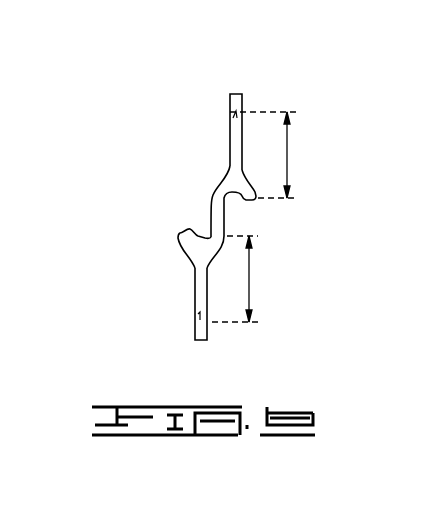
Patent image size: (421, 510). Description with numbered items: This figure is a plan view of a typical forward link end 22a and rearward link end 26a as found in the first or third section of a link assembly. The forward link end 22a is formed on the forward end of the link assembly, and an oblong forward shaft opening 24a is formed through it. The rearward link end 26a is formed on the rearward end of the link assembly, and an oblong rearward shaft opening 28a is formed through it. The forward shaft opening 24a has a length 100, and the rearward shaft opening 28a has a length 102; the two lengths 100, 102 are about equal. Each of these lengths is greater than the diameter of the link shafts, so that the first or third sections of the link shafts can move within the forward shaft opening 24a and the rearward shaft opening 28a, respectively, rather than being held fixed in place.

The forward link end 22a is at (236, 94).
The forward shaft opening 24a is at (227, 127).
The rearward link end 26a is at (201, 341).
The rearward shaft opening 28a is at (198, 304).
The length 100 is at (287, 157).
The length 102 is at (249, 278).